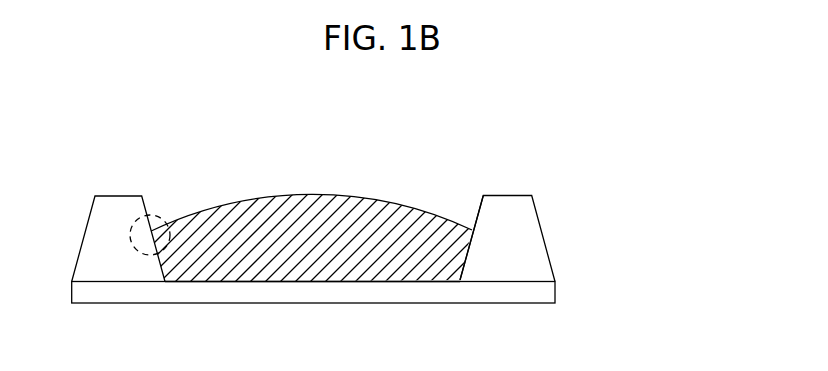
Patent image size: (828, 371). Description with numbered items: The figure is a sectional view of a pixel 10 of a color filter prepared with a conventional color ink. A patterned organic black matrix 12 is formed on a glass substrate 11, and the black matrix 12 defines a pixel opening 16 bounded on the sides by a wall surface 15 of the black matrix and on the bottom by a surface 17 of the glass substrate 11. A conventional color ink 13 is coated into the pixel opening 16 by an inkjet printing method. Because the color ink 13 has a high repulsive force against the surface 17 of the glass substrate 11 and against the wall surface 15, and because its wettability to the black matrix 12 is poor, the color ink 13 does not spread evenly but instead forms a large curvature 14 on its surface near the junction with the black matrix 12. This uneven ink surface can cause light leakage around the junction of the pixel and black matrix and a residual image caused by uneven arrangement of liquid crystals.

The pixel 10 is at (382, 231).
The glass substrate 11 is at (547, 292).
The black matrix 12 is at (536, 242).
The color ink 13 is at (345, 189).
The curvature 14 is at (152, 213).
The wall surface 15 is at (476, 214).
The pixel opening 16 is at (402, 197).
The surface of glass substrate 17 is at (197, 282).